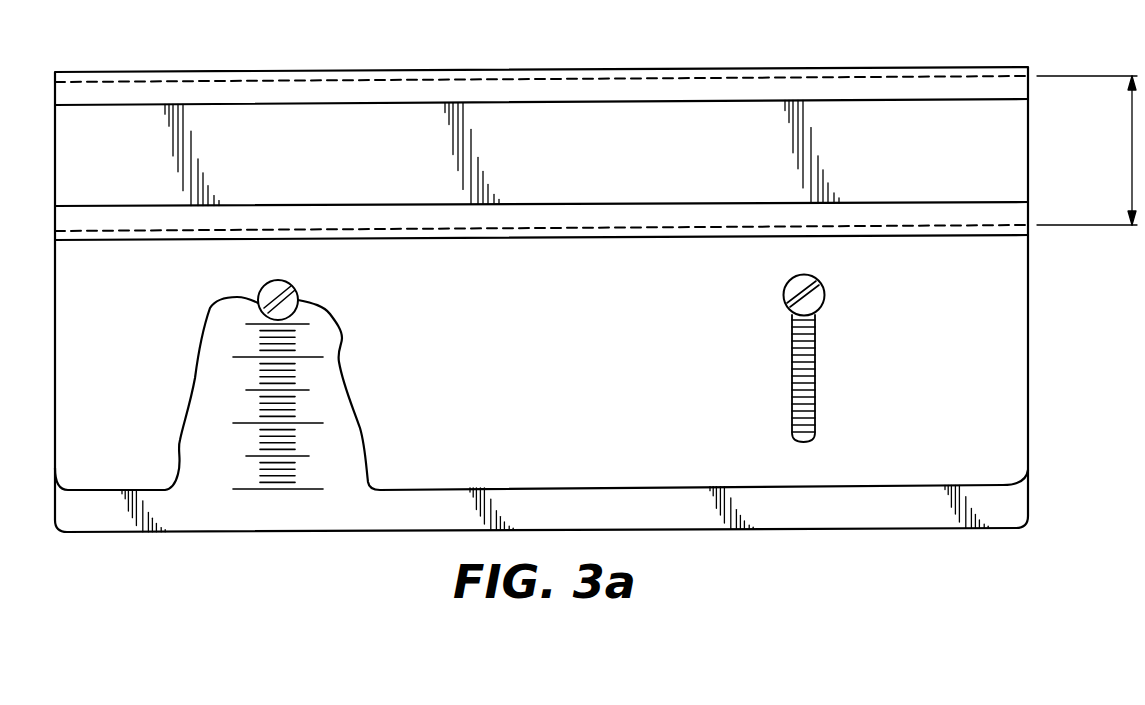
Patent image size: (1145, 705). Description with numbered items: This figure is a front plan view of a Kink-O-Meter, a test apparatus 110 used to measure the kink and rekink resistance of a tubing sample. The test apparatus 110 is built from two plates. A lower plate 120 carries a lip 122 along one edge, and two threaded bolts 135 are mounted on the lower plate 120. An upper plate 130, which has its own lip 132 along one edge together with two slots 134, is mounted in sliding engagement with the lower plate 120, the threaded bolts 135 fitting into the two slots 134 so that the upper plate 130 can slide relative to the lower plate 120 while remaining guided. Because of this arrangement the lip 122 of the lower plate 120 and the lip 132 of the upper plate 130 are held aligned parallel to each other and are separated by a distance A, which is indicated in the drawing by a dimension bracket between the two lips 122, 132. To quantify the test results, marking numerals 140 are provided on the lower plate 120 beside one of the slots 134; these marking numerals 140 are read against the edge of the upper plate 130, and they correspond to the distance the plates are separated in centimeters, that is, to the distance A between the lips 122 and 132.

The test apparatus 110 is at (186, 55).
The lower plate 120 is at (1003, 152).
The lip 122 is at (950, 84).
The upper plate 130 is at (119, 419).
The lip 132 is at (1008, 224).
The slots 134 is at (795, 440).
The threaded bolts 135 is at (297, 302).
The marking numerals 140 is at (317, 424).
The distance A is at (1132, 180).